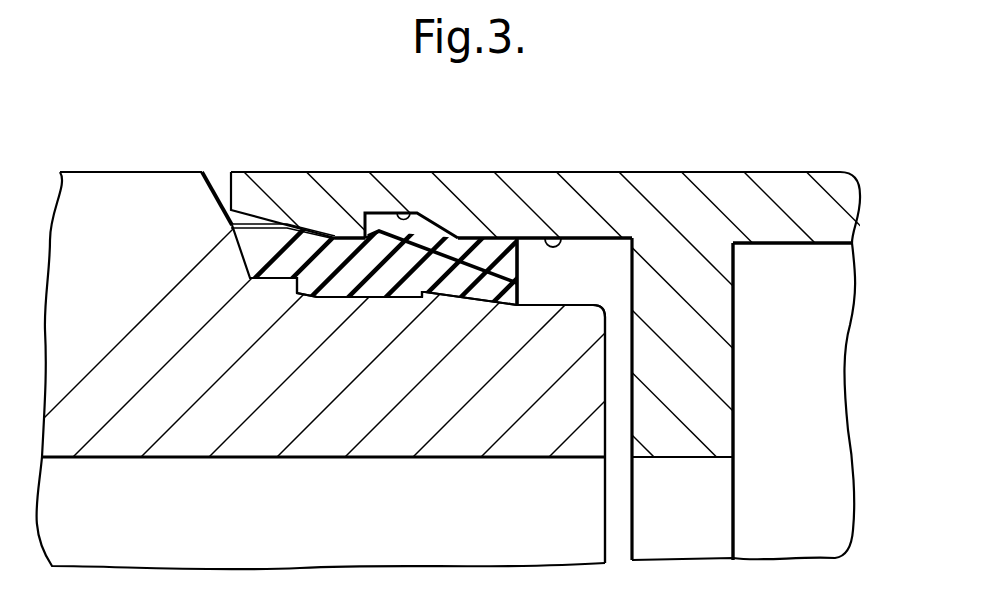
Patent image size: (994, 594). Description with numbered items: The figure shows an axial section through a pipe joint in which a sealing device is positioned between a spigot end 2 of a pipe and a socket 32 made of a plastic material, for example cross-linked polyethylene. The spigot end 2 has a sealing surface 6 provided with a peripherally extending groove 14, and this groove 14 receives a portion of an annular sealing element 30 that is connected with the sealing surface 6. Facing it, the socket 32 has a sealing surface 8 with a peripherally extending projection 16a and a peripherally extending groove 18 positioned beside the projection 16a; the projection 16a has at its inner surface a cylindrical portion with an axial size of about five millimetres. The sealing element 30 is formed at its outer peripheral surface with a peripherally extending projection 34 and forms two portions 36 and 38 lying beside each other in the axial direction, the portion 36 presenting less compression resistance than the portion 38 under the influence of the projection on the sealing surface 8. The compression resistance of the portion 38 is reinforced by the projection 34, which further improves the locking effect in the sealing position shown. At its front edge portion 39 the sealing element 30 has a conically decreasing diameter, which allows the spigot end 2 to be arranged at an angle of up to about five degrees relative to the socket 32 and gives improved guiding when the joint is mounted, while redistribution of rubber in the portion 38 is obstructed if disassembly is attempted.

The spigot end 2 is at (418, 420).
The sealing surface 6 is at (555, 304).
The sealing surface 8 is at (566, 240).
The groove 14 is at (350, 304).
The projection 16a is at (345, 236).
The groove 18 is at (404, 220).
The sealing element 30 is at (422, 248).
The socket 32 is at (690, 193).
The projection 34 is at (368, 232).
The portion 36 is at (383, 256).
The portion 38 is at (400, 300).
The front edge portion 39 is at (480, 262).